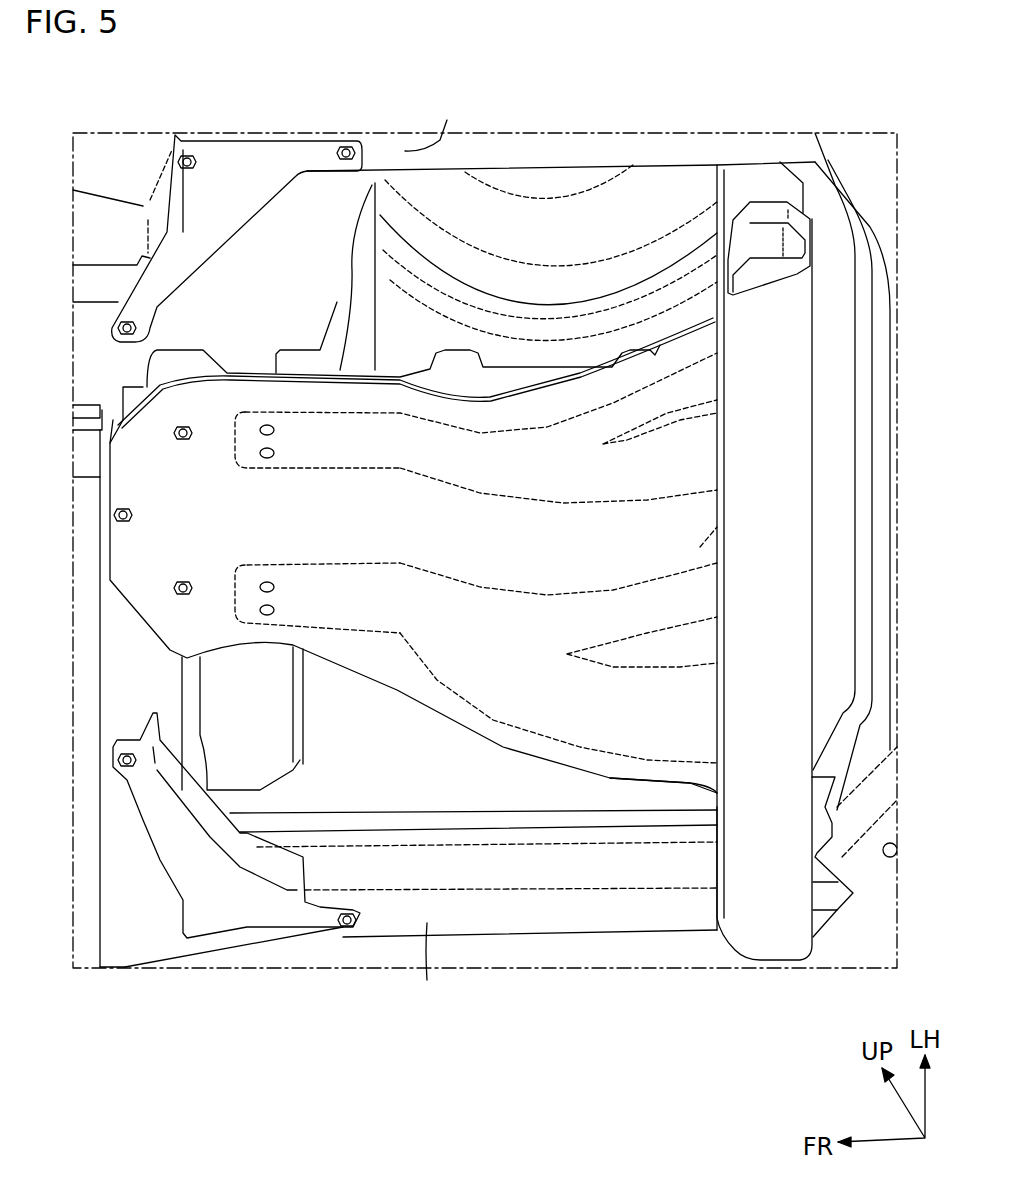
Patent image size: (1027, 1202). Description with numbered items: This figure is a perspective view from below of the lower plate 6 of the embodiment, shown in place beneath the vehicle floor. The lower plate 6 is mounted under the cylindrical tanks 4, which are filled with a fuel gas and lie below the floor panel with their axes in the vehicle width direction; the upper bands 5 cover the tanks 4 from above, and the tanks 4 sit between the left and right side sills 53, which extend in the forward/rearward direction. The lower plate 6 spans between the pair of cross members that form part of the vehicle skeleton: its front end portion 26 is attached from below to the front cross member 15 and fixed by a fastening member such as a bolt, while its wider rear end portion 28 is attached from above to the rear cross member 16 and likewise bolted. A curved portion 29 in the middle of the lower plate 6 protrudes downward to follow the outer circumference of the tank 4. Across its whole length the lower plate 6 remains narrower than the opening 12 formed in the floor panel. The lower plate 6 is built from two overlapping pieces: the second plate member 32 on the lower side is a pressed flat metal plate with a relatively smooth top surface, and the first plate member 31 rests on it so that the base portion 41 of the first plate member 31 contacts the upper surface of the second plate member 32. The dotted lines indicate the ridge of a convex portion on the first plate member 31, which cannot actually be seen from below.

The tank 4 is at (368, 302).
The upper band 5 is at (320, 347).
The side sill 53 is at (436, 546).
The first plate member 31 is at (515, 397).
The rear cross member 16 is at (793, 325).
The base portion 41 is at (123, 412).
The front end portion 26 is at (130, 485).
The rear end portion 28 is at (700, 547).
The front cross member 15 is at (120, 665).
The opening 12 is at (398, 784).
The second plate member 32 is at (300, 540).
The curved portion 29 is at (520, 680).
The lower plate 6 is at (610, 779).